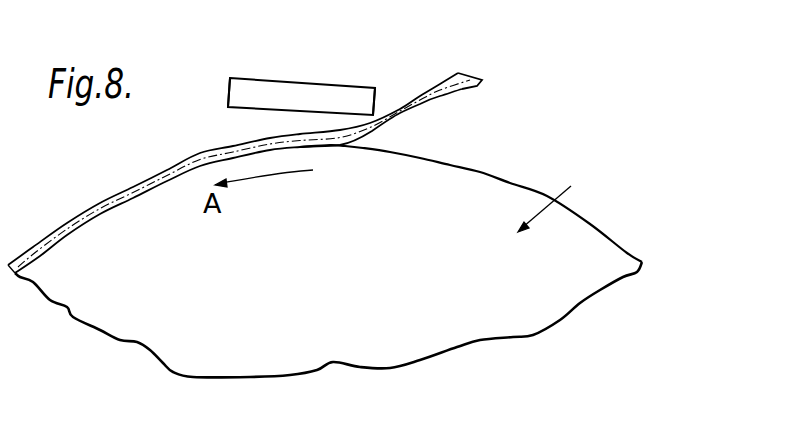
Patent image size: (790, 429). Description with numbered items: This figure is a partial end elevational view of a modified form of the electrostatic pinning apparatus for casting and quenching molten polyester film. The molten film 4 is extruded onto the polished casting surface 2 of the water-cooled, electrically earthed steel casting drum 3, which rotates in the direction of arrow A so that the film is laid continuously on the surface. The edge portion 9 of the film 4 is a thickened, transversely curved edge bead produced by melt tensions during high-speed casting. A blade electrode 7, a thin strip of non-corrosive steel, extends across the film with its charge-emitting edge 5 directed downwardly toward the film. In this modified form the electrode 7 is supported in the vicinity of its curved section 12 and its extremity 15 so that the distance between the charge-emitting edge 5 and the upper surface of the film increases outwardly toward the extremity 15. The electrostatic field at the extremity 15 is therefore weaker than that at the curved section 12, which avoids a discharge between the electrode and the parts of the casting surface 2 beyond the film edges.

The polished casting surface 2 is at (492, 173).
The casting drum 3 is at (571, 186).
The molten film 4 is at (245, 141).
The charge-emitting edge 5 is at (270, 85).
The blade electrode 7 is at (303, 88).
The edge portion 9 is at (432, 101).
The curved section 12 is at (345, 101).
The extremity 15 is at (255, 89).